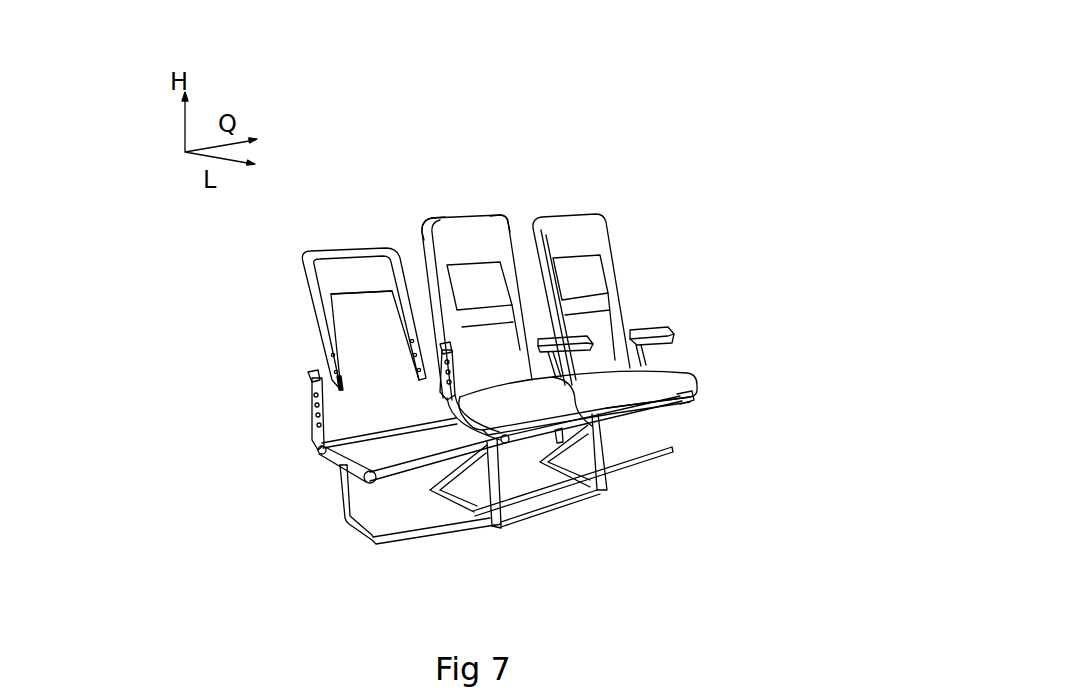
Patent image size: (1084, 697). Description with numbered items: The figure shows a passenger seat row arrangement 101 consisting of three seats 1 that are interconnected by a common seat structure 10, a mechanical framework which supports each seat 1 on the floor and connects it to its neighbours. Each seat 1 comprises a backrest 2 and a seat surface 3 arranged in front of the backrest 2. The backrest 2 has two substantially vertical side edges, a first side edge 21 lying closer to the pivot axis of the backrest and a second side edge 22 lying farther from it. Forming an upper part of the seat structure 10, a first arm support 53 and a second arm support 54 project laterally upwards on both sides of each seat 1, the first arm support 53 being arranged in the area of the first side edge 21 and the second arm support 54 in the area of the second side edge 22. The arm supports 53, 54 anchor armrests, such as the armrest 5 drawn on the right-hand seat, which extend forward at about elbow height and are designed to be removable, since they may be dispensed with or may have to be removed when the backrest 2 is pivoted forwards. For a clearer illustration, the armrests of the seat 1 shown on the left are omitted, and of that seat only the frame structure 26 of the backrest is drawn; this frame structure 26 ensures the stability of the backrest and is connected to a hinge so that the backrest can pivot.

The passenger seat row arrangement 101 is at (537, 209).
The seat 1 is at (607, 208).
The backrest 2 is at (445, 240).
The first side edge 21 is at (425, 228).
The second side edge 22 is at (505, 222).
The frame structure 26 is at (320, 341).
The armrest 5 is at (653, 330).
The seat surface 3 is at (542, 398).
The first arm support 53 is at (453, 420).
The second arm support 54 is at (312, 424).
The seat structure 10 is at (373, 545).